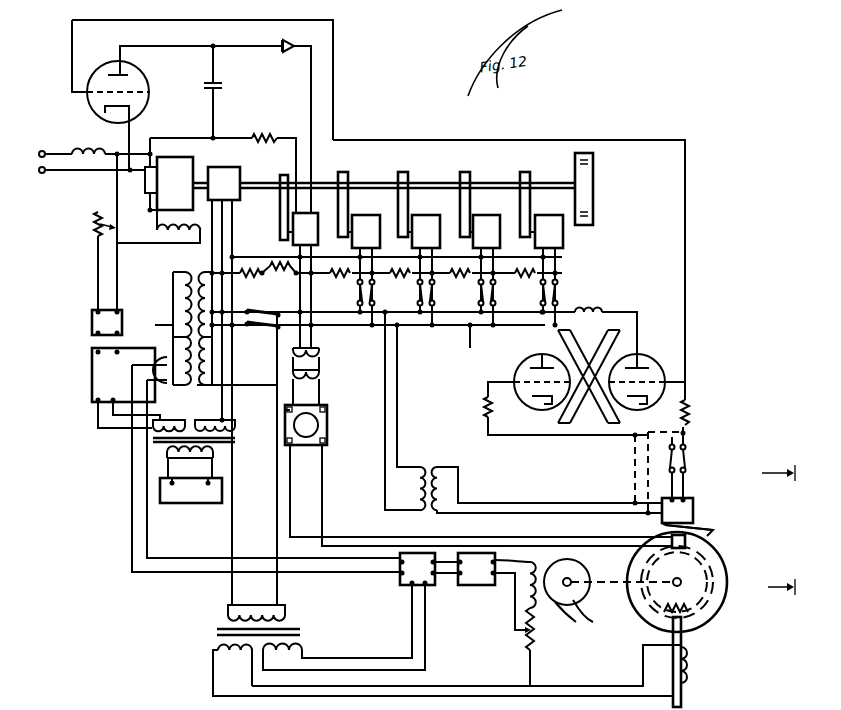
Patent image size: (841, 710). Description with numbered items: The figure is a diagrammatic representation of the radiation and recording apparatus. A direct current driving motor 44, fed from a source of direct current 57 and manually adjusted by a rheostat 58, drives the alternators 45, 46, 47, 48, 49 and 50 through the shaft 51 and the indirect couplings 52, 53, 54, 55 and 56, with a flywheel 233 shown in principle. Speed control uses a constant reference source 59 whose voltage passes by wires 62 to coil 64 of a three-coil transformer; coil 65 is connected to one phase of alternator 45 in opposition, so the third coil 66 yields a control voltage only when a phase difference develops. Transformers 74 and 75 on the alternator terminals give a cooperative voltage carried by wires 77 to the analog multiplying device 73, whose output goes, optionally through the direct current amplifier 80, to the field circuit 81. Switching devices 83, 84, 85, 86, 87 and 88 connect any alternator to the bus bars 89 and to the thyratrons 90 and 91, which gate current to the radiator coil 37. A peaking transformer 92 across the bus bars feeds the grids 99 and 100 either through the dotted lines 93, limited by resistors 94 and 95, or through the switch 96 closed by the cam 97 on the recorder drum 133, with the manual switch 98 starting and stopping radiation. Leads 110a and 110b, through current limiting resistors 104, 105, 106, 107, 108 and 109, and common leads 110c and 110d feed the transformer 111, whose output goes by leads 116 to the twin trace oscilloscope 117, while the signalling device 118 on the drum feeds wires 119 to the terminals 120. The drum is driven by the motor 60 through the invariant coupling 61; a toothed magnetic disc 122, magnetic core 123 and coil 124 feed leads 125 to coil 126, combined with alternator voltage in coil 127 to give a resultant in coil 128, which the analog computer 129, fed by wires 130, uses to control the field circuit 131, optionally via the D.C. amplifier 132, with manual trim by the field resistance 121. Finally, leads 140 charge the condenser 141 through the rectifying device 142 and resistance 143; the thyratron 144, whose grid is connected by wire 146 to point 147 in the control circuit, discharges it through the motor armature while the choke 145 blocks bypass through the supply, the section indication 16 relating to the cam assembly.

The source of direct current 57 is at (36, 162).
The rheostat 58 is at (92, 228).
The choke 145 is at (96, 146).
The thyratron 144 is at (142, 108).
The rectifying device 142 is at (282, 66).
The condenser 141 is at (226, 86).
The current limiting resistance 143 is at (266, 132).
The shaft 51 is at (256, 180).
The leads 140 is at (313, 160).
The driving motor 44 is at (169, 183).
The alternator 45 is at (224, 183).
The indirect coupling 52 is at (279, 206).
The indirect coupling 53 is at (350, 205).
The indirect coupling 54 is at (410, 205).
The indirect coupling 55 is at (472, 205).
The indirect coupling 56 is at (532, 205).
The flywheel 233 is at (594, 172).
The wire 146 is at (686, 222).
The alternator 46 is at (290, 236).
The alternator 47 is at (366, 270).
The alternator 48 is at (426, 270).
The alternator 49 is at (486, 270).
The alternator 50 is at (549, 231).
The lead 110a is at (556, 262).
The lead 110b is at (544, 276).
The current limiting resistor 105 is at (243, 282).
The current limiting resistor 104 is at (286, 282).
The current limiting resistor 106 is at (335, 283).
The current limiting resistor 107 is at (394, 282).
The current limiting resistor 108 is at (458, 282).
The current limiting resistor 109 is at (530, 270).
The switching device 84 is at (325, 300).
The switching device 85 is at (380, 298).
The switching device 86 is at (434, 330).
The switching device 87 is at (494, 328).
The coil 37 is at (606, 310).
The switching device 88 is at (582, 310).
The grid 99 is at (556, 375).
The thyratron 90 is at (524, 410).
The thyratron 91 is at (660, 356).
The grid 100 is at (672, 376).
The point in radiation control circuit 147 is at (688, 388).
The bus bars 89 is at (490, 346).
The resistor 94 is at (482, 408).
The resistor 95 is at (693, 414).
The dotted lines 93 is at (634, 468).
The manual switch 98 is at (698, 460).
The section line 16 is at (759, 536).
The switch 96 is at (695, 502).
The cam 97 is at (716, 534).
The signalling device 118 is at (690, 550).
The recorder drum 133 is at (727, 600).
The invariant coupling 61 is at (606, 590).
The direct current motor 60 is at (578, 617).
The field circuit 131 is at (540, 604).
The field resistance 121 is at (542, 636).
The analog computer 129 is at (398, 586).
The wires 130 is at (400, 600).
The D.C. amplifier 132 is at (472, 590).
The coil 127 is at (226, 618).
The second coil 65 is at (232, 445).
The coil 128 is at (306, 645).
The coil 126 is at (216, 656).
The leads 125 is at (497, 696).
The toothed magnetic disc 122 is at (686, 632).
The magnetic core 123 is at (690, 656).
The coil 124 is at (690, 678).
The peaking transformer 92 is at (430, 464).
The twin trace oscilloscope 117 is at (329, 426).
The leads 116 is at (285, 408).
The common lead 110c is at (290, 362).
The common lead 110d is at (322, 360).
The transformer 111 is at (312, 384).
The terminals 120 is at (300, 452).
The wires 119 is at (292, 490).
The source of constant alternating current 59 is at (186, 504).
The wires 62 is at (190, 468).
The coil 64 is at (214, 452).
The third coil 66 is at (153, 432).
The transformer 75 is at (190, 392).
The transformer 74 is at (192, 270).
The wires 77 is at (123, 375).
The analog multiplying device 73 is at (90, 392).
The direct current amplifier 80 is at (90, 330).
The field circuit 81 is at (166, 238).
The switch 83 is at (256, 336).